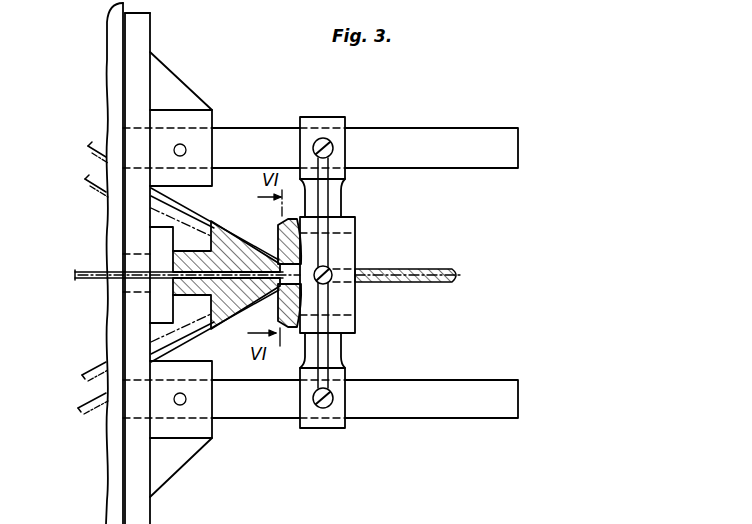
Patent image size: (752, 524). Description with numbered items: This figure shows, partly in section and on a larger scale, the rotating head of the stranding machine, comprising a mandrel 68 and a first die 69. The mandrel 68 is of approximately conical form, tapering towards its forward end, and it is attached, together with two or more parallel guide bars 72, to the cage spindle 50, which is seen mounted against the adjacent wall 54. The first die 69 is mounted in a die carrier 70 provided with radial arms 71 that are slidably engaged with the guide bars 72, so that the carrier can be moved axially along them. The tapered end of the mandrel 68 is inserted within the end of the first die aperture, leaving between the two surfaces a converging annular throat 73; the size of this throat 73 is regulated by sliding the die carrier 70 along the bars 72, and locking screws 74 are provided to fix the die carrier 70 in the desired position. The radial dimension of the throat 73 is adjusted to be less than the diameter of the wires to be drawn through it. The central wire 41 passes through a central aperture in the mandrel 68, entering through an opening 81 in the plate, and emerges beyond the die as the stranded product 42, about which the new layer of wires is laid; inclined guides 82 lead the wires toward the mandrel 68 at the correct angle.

The central wire 41 is at (82, 270).
The wire 42 is at (423, 269).
The cage spindle 50 is at (140, 47).
The wall 54 is at (120, 95).
The mandrel 68 is at (230, 296).
The first die 69 is at (284, 324).
The die carrier 70 is at (350, 297).
The radial arms 71 is at (336, 121).
The guide bars 72 is at (455, 152).
The converging annular throat 73 is at (280, 248).
The locking screws 74 is at (323, 138).
The opening 81 is at (140, 273).
The strut 82 is at (225, 220).